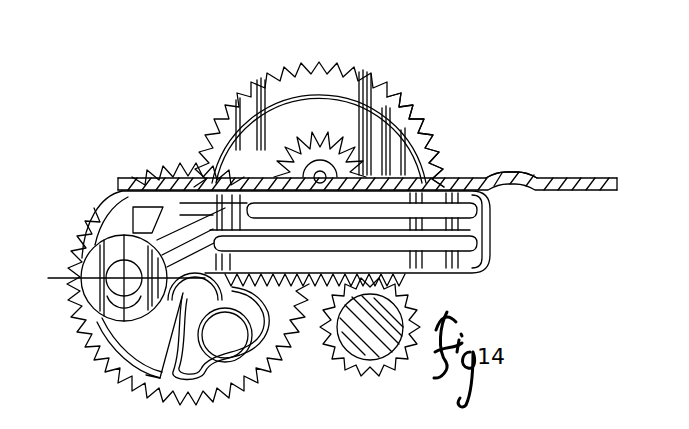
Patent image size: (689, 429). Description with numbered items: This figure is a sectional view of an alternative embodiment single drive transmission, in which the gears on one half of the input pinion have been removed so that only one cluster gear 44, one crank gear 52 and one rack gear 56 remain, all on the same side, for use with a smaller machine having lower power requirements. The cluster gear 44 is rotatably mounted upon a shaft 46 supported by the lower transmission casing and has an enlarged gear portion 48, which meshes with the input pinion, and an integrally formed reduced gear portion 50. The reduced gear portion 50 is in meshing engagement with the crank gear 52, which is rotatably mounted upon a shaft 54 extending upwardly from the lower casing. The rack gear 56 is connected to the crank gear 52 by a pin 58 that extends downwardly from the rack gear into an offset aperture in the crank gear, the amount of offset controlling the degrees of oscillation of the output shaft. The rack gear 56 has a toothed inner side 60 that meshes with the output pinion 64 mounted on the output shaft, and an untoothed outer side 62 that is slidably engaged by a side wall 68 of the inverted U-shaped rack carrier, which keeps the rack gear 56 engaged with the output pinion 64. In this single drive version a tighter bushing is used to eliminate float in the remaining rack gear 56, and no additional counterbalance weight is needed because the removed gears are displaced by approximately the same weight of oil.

The cluster gear 44 is at (338, 150).
The shaft 46 is at (380, 105).
The enlarged gear portion 48 is at (398, 122).
The reduced gear portion 50 is at (320, 132).
The crank gear 52 is at (125, 368).
The shaft 54 is at (143, 380).
The rack gear 56 is at (444, 178).
The pin 58 is at (105, 352).
The toothed inner side 60 is at (295, 290).
The untoothed outer side 62 is at (455, 185).
The output pinion 64 is at (349, 368).
The side wall 68 is at (543, 178).